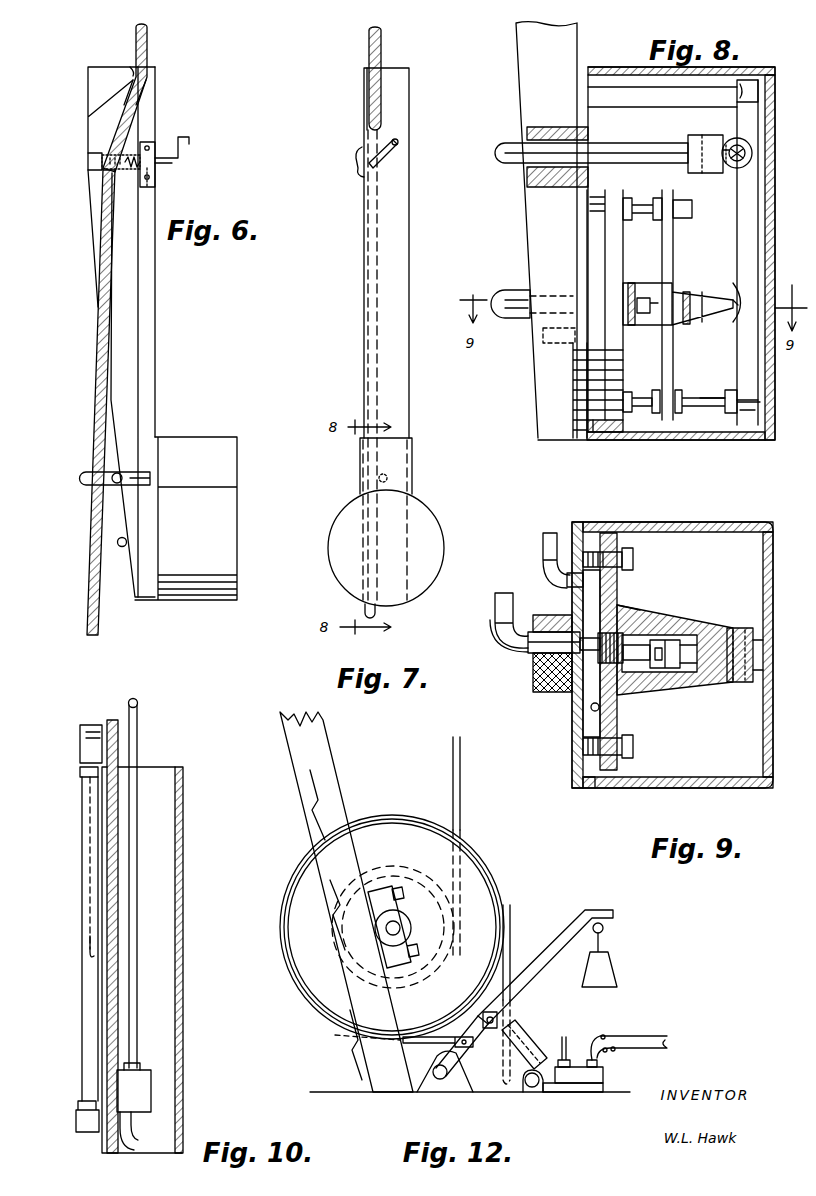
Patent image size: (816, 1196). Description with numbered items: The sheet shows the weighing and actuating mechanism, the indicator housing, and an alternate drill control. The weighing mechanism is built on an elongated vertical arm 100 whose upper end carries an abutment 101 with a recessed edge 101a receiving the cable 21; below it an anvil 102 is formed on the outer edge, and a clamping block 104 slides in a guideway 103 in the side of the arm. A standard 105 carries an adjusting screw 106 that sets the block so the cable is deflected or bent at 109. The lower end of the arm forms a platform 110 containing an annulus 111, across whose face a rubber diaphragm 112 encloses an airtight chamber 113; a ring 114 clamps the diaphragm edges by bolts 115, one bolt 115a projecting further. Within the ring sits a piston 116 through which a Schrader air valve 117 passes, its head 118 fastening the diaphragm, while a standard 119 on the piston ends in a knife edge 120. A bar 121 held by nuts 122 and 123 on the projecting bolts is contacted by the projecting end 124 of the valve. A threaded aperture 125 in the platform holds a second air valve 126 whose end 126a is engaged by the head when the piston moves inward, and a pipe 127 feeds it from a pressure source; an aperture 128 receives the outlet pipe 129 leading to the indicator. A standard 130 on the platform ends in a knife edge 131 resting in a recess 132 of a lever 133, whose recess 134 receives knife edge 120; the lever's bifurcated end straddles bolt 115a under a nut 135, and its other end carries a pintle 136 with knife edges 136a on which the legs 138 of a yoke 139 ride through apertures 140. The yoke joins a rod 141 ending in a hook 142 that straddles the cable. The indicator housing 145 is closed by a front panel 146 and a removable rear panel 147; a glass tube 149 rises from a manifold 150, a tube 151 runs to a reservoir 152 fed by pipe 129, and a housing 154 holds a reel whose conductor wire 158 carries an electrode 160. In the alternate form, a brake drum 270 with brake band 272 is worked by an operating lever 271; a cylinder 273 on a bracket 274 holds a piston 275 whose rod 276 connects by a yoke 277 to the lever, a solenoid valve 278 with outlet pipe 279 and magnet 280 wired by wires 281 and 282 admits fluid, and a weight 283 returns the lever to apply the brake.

In FIG. 6, the cable 21 is at (143, 53).
In FIG. 7, the cable 21 is at (369, 50).
In FIG. 6, the arm 100 is at (147, 298).
In FIG. 7, the arm 100 is at (403, 113).
In FIG. 8, the arm 100 is at (558, 52).
In FIG. 9, the arm 100 is at (533, 673).
In FIG. 6, the abutment 101 is at (107, 80).
In FIG. 7, the abutment 101 is at (367, 80).
In FIG. 6, the frame top edge 101a is at (133, 72).
In FIG. 6, the anvil 102 is at (88, 162).
In FIG. 6, the guideway 103 is at (135, 140).
In FIG. 6, the clamping block 104 is at (115, 173).
In FIG. 6, the standard 105 is at (153, 183).
In FIG. 7, the standard 105 is at (356, 165).
In FIG. 6, the adjusting screw 106 is at (173, 155).
In FIG. 7, the adjusting screw 106 is at (397, 152).
In FIG. 6, the deflected cable portion 109 is at (140, 108).
In FIG. 6, the platform 110 is at (156, 437).
In FIG. 7, the platform 110 is at (327, 535).
In FIG. 8, the platform 110 is at (577, 413).
In FIG. 9, the platform 110 is at (577, 730).
In FIG. 8, the annulus 111 is at (593, 432).
In FIG. 9, the annulus 111 is at (590, 780).
In FIG. 8, the diaphragm 112 is at (603, 230).
In FIG. 9, the diaphragm 112 is at (620, 688).
In FIG. 9, the airtight chamber 113 is at (593, 598).
In FIG. 8, the ring 114 is at (617, 424).
In FIG. 9, the ring 114 is at (613, 547).
In FIG. 9, the bolts 115 is at (630, 553).
In FIG. 8, the bolt 115a is at (705, 410).
In FIG. 9, the piston 116 is at (623, 613).
In FIG. 9, the air valve 117 is at (665, 622).
In FIG. 9, the head 118 is at (591, 703).
In FIG. 8, the standard 119 is at (650, 293).
In FIG. 9, the standard 119 is at (703, 618).
In FIG. 8, the knife edge 120 is at (728, 312).
In FIG. 9, the knife edge 120 is at (735, 687).
In FIG. 8, the bar 121 is at (668, 390).
In FIG. 9, the bar 121 is at (665, 668).
In FIG. 8, the nut 122 is at (655, 392).
In FIG. 8, the nut 123 is at (680, 390).
In FIG. 8, the projecting end 124 is at (655, 305).
In FIG. 9, the projecting end 124 is at (655, 662).
In FIG. 9, the screwthreaded aperture 125 is at (580, 653).
In FIG. 9, the air valve 126 is at (540, 643).
In FIG. 9, the projecting end 126a is at (620, 607).
In FIG. 6, the pipe 127 is at (120, 547).
In FIG. 8, the pipe 127 is at (510, 298).
In FIG. 9, the pipe 127 is at (503, 593).
In FIG. 9, the aperture 128 is at (570, 562).
In FIG. 9, the outlet pipe 129 is at (545, 548).
In FIG. 10, the outlet pipe 129 is at (130, 1028).
In FIG. 8, the standard 130 is at (648, 98).
In FIG. 8, the knife edge 131 is at (740, 90).
In FIG. 8, the recess 132 is at (758, 98).
In FIG. 8, the lever 133 is at (737, 117).
In FIG. 9, the lever 133 is at (747, 627).
In FIG. 8, the recess 134 is at (730, 287).
In FIG. 8, the nut 135 is at (737, 415).
In FIG. 8, the pintle 136 is at (737, 170).
In FIG. 8, the knife edges 136a is at (727, 168).
In FIG. 8, the legs 138 is at (713, 153).
In FIG. 8, the yoke 139 is at (690, 138).
In FIG. 8, the apertures 140 is at (752, 138).
In FIG. 6, the rod 141 is at (135, 495).
In FIG. 8, the rod 141 is at (510, 140).
In FIG. 6, the hook 142 is at (83, 480).
In FIG. 7, the hook 142 is at (390, 478).
In FIG. 10, the housing 145 is at (153, 772).
In FIG. 10, the panel 146 is at (118, 741).
In FIG. 10, the removable panel 147 is at (183, 795).
In FIG. 10, the tube 149 is at (85, 1000).
In FIG. 10, the manifold 150 is at (96, 1126).
In FIG. 10, the tube 151 is at (131, 1149).
In FIG. 10, the reservoir 152 is at (137, 1095).
In FIG. 10, the housing 154 is at (93, 724).
In FIG. 10, the conductor wire 158 is at (90, 903).
In FIG. 10, the electrode 160 is at (86, 947).
In FIG. 12, the brake drum 270 is at (480, 885).
In FIG. 12, the operating lever 271 is at (563, 935).
In FIG. 12, the brake band 272 is at (505, 927).
In FIG. 12, the cylinder 273 is at (478, 1090).
In FIG. 12, the bracket 274 is at (540, 1090).
In FIG. 12, the piston 275 is at (535, 1053).
In FIG. 12, the piston rod 276 is at (505, 1022).
In FIG. 12, the yoke 277 is at (488, 1015).
In FIG. 12, the solenoid valve 278 is at (573, 1079).
In FIG. 12, the outlet pipe 279 is at (562, 1040).
In FIG. 12, the operating magnet 280 is at (597, 1062).
In FIG. 12, the wire 281 is at (648, 1033).
In FIG. 12, the wire 282 is at (632, 1055).
In FIG. 12, the weight 283 is at (608, 950).